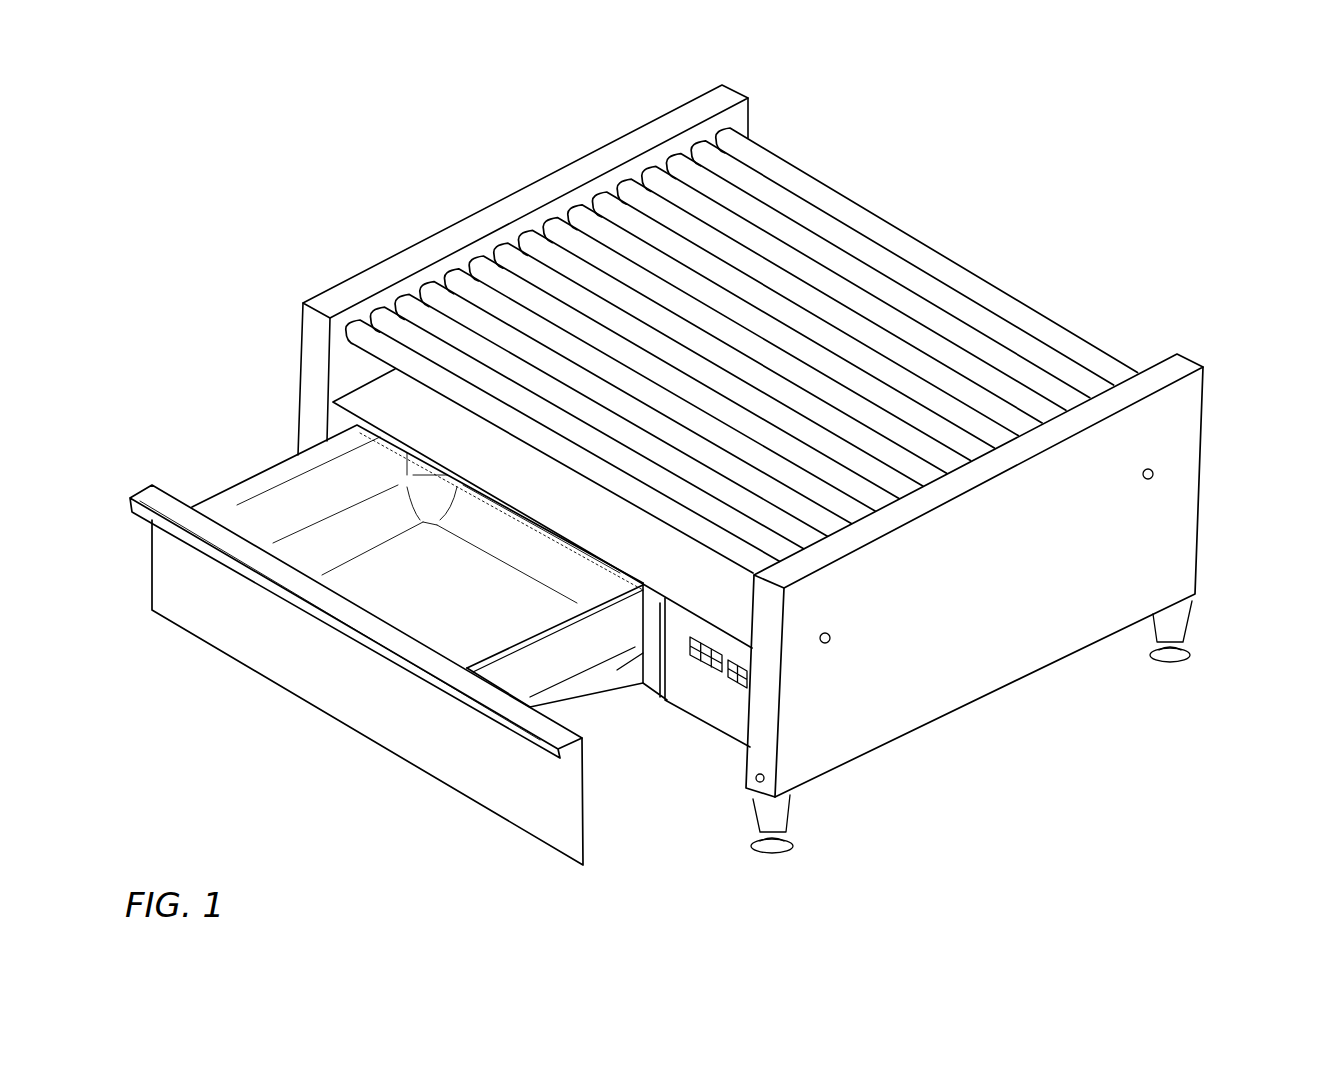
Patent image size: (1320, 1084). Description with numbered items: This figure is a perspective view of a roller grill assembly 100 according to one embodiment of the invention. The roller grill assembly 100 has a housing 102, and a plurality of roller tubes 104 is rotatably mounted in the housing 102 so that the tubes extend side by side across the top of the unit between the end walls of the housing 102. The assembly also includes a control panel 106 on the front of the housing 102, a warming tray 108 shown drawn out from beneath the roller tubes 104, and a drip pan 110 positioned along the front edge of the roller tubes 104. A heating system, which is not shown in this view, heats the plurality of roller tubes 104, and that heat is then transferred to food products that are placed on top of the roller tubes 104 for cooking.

The roller grill assembly 100 is at (1066, 163).
The housing 102 is at (1207, 493).
The roller tubes 104 is at (893, 262).
The control panel 106 is at (707, 703).
The warming tray 108 is at (245, 646).
The drip pan 110 is at (377, 396).